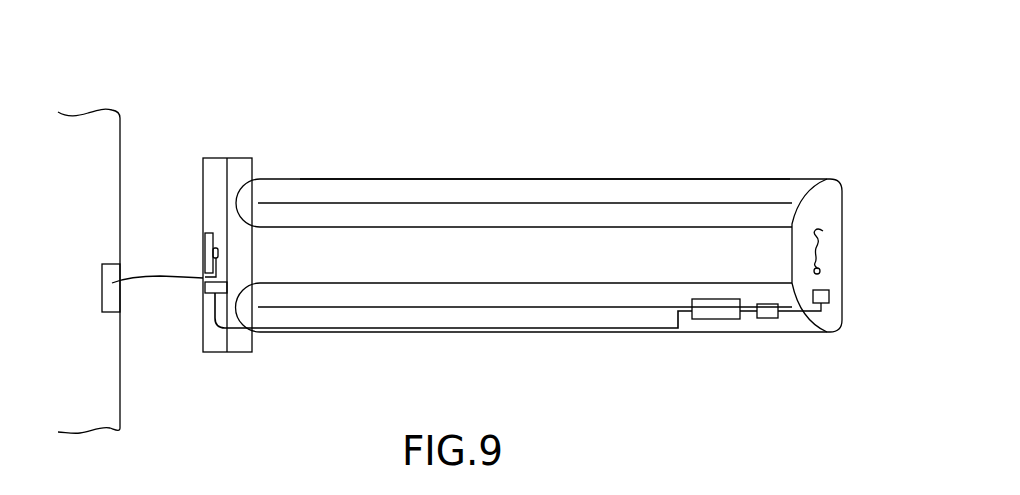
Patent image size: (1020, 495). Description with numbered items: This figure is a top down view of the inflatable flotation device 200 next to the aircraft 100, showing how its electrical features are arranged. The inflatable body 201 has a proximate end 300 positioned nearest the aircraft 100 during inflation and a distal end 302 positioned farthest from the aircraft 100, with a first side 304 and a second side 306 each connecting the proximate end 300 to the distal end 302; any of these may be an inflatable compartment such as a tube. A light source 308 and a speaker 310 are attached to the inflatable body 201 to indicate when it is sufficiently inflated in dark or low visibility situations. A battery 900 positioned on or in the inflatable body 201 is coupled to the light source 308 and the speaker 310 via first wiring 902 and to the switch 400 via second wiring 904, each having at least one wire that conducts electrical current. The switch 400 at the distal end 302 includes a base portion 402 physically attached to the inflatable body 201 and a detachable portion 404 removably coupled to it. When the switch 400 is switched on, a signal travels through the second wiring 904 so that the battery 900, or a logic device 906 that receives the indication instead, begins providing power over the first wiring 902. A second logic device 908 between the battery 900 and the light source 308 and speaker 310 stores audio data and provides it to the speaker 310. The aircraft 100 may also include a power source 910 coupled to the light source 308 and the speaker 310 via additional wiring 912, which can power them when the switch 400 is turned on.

The aircraft 100 is at (108, 112).
The inflatable flotation device 200 is at (341, 130).
The inflatable body 201 is at (478, 188).
The proximate end 300 is at (213, 180).
The distal end 302 is at (831, 205).
The first side 304 is at (493, 318).
The second side 306 is at (565, 187).
The light source 308 is at (205, 245).
The speaker 310 is at (218, 253).
The switch 400 is at (851, 262).
The base portion 402 is at (829, 299).
The detachable portion 404 is at (828, 233).
The battery 900 is at (715, 299).
The first wiring 902 is at (362, 331).
The second wiring 904 is at (791, 314).
The logic device 906 is at (767, 304).
The second logic device 908 is at (205, 288).
The power source 910 is at (110, 313).
The additional wiring 912 is at (157, 288).